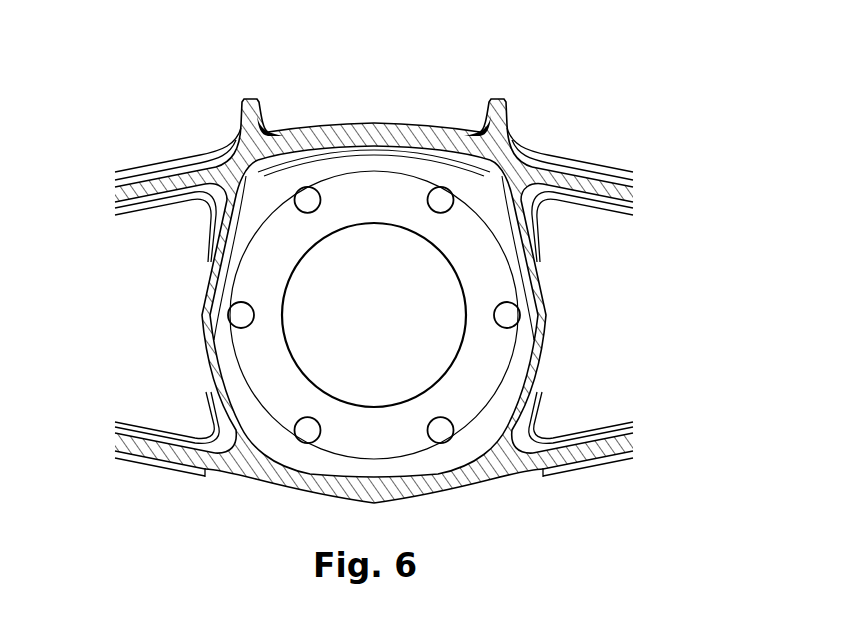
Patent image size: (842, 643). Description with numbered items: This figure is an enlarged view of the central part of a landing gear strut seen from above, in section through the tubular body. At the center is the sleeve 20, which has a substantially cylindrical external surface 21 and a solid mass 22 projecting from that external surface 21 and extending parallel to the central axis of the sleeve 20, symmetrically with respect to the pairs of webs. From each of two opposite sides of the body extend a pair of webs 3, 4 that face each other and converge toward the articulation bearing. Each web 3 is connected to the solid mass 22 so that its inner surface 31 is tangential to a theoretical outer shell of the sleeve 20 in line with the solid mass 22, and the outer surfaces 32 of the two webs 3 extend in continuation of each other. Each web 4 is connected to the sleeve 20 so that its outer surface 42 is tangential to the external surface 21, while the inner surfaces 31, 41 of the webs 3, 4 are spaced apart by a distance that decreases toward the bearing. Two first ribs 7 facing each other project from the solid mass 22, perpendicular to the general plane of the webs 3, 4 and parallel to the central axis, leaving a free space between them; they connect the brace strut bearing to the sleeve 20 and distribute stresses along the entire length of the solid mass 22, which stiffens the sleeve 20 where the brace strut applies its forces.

The web 3 is at (137, 190).
The web 4 is at (140, 458).
The first rib 7 is at (254, 99).
The sleeve 20 is at (490, 261).
The external surface 21 is at (187, 313).
The solid mass 22 is at (388, 125).
The inner surface 31 is at (150, 213).
The outer surface 32 is at (181, 152).
The inner surface 41 is at (148, 412).
The outer surface 42 is at (181, 477).